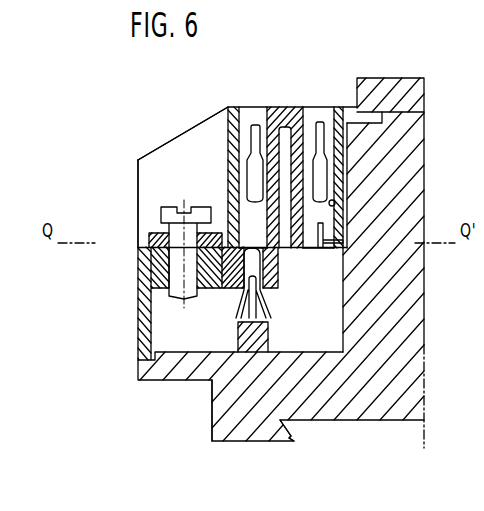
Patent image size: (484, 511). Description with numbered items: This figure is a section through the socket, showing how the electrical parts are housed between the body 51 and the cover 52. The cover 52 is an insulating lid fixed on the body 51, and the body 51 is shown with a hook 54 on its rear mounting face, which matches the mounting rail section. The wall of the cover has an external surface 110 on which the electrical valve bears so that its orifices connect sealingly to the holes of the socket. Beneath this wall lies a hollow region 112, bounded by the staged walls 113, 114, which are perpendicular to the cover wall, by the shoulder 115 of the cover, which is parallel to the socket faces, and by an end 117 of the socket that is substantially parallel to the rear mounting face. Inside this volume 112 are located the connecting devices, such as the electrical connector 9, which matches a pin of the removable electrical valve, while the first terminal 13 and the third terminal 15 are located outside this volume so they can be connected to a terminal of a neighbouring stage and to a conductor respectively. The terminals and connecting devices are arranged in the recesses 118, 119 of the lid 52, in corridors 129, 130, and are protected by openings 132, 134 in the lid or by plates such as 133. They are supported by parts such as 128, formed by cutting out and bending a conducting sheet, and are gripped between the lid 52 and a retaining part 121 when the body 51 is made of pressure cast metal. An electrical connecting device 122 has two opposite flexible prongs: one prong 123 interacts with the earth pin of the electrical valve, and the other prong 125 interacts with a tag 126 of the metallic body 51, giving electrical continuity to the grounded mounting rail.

The electrical connector 9 is at (345, 107).
The first terminal 13 is at (333, 215).
The third terminal 15 is at (183, 237).
The body 51 is at (323, 380).
The cover 52 is at (405, 95).
The hook 54 is at (293, 442).
The external surface 110 is at (368, 74).
The hollow region 112 is at (323, 341).
The staged wall 113 is at (228, 172).
The staged wall 114 is at (147, 293).
The shoulder 115 is at (362, 128).
The end 117 is at (203, 346).
The recess 118 is at (334, 205).
The recess 119 is at (264, 262).
The retaining part 121 is at (220, 278).
The electrical connecting device 122 is at (250, 222).
The flexible prong 123 is at (258, 124).
The flexible prong 125 is at (266, 300).
The tag 126 is at (212, 442).
The support part 128 is at (346, 268).
The corridor 129 is at (305, 130).
The corridor 130 is at (263, 124).
The opening 132 is at (247, 107).
The plate 133 is at (163, 153).
The opening 134 is at (319, 123).